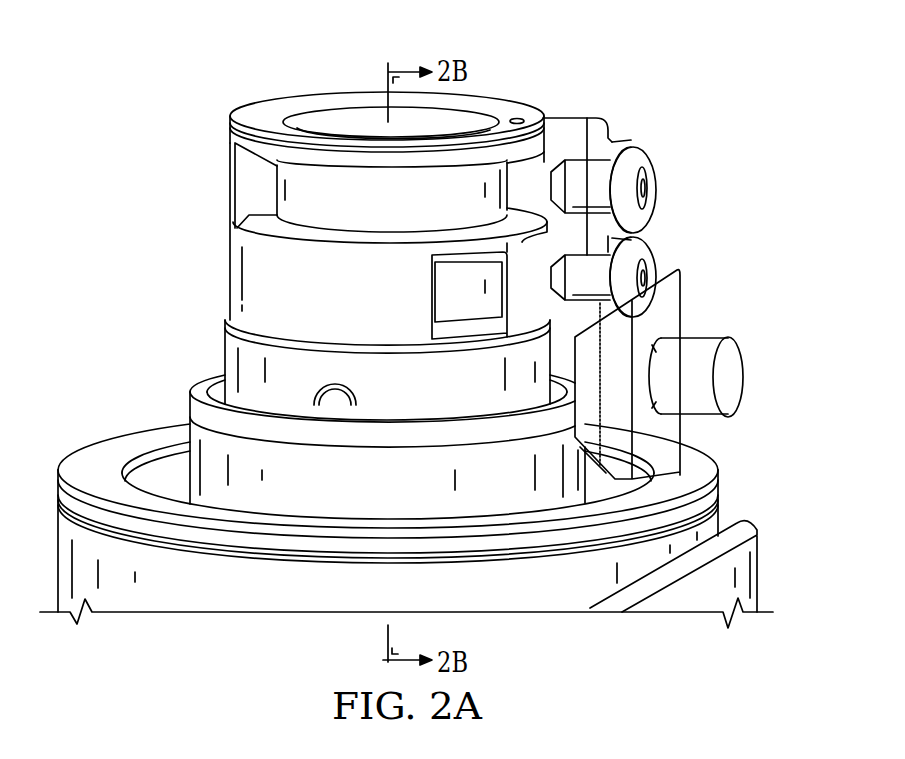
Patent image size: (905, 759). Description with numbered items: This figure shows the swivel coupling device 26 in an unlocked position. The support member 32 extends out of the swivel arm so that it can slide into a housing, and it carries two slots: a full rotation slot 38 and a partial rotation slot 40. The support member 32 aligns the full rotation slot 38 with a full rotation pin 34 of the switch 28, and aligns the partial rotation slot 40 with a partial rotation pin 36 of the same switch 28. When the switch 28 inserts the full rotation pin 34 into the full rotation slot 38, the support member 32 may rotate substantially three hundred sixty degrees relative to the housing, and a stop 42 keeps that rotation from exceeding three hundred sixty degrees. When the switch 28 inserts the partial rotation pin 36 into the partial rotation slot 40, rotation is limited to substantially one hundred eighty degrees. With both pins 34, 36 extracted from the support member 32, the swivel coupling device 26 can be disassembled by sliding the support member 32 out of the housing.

The swivel coupling device 26 is at (582, 67).
The switch 28 is at (740, 381).
The support member 32 is at (514, 108).
The full rotation pin 34 is at (655, 175).
The partial rotation pin 36 is at (655, 268).
The full rotation slot 38 is at (340, 210).
The partial rotation slot 40 is at (459, 294).
The stop 42 is at (247, 187).